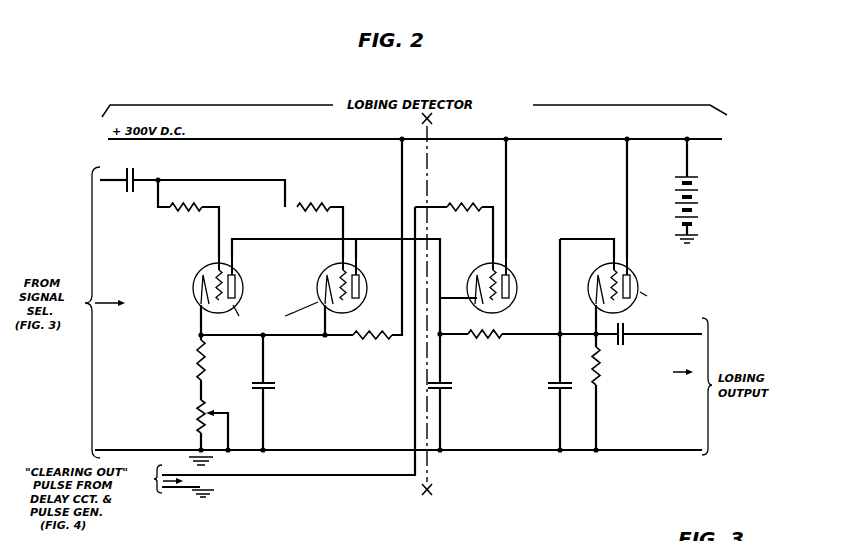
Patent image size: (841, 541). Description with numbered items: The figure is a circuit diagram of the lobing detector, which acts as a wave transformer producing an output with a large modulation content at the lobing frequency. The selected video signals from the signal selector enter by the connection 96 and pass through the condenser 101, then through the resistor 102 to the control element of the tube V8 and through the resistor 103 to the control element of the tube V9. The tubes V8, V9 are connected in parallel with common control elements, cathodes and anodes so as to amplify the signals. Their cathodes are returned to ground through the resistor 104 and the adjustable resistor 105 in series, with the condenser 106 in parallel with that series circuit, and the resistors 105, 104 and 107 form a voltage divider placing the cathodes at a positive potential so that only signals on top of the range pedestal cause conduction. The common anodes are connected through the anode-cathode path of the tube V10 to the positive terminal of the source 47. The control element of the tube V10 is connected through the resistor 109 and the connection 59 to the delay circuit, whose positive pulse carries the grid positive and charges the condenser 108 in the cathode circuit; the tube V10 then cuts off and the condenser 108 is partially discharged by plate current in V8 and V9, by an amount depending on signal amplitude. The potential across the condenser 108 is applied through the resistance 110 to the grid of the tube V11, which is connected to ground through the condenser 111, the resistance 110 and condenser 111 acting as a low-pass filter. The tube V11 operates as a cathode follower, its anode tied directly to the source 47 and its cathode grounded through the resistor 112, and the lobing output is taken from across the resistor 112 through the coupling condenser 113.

The connection 96 is at (100, 182).
The condenser 101 is at (134, 186).
The resistor 102 is at (174, 212).
The resistor 103 is at (309, 212).
The resistor 104 is at (206, 371).
The adjustable resistor 105 is at (208, 394).
The condenser 106 is at (275, 386).
The resistor 107 is at (389, 327).
The condenser 108 is at (452, 385).
The resistor 109 is at (456, 213).
The resistance 110 is at (496, 326).
The condenser 111 is at (548, 385).
The resistor 112 is at (604, 361).
The coupling condenser 113 is at (627, 316).
The source 47 is at (694, 208).
The connection 59 is at (310, 475).
The tube V8 is at (237, 270).
The tube V9 is at (362, 278).
The tube V10 is at (512, 280).
The tube V11 is at (638, 280).